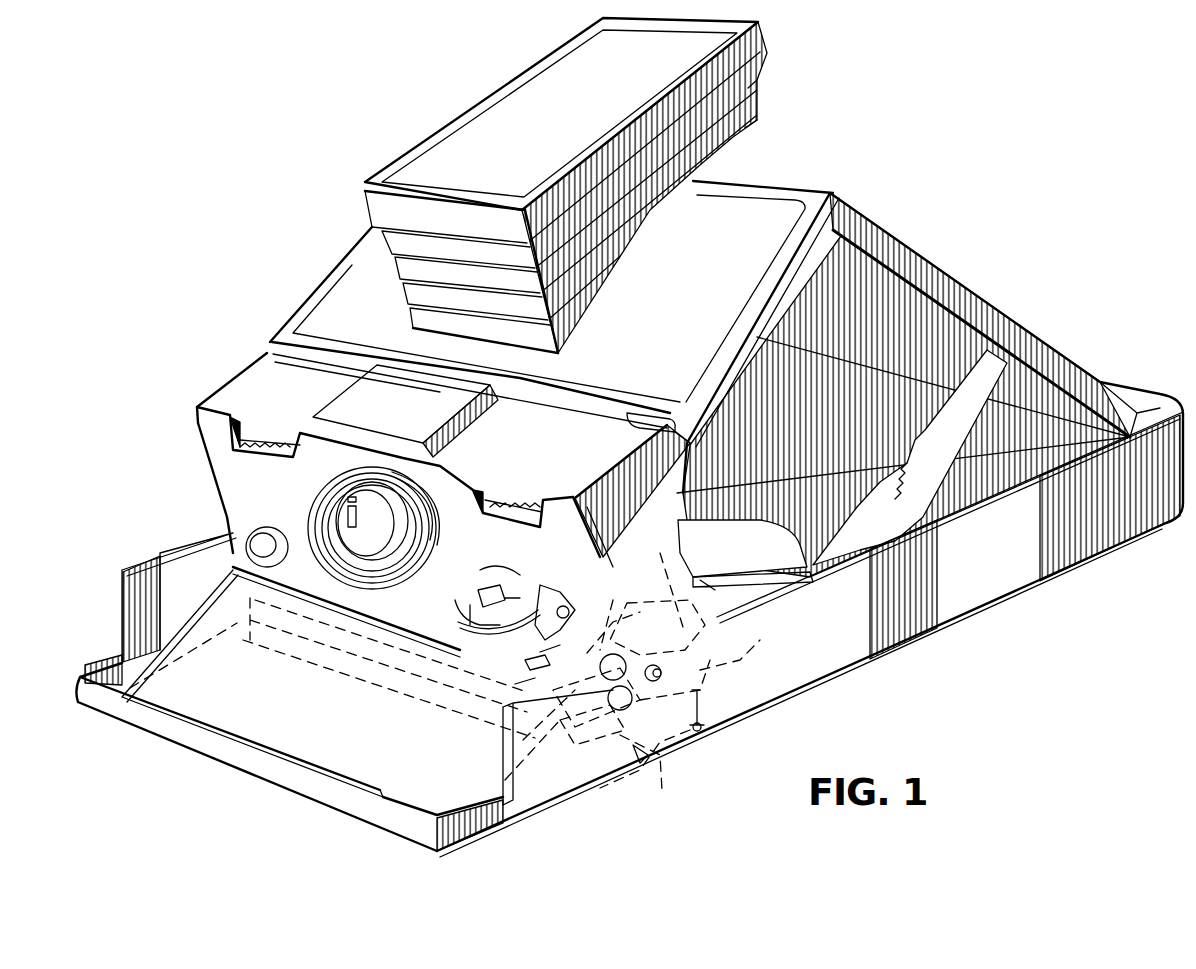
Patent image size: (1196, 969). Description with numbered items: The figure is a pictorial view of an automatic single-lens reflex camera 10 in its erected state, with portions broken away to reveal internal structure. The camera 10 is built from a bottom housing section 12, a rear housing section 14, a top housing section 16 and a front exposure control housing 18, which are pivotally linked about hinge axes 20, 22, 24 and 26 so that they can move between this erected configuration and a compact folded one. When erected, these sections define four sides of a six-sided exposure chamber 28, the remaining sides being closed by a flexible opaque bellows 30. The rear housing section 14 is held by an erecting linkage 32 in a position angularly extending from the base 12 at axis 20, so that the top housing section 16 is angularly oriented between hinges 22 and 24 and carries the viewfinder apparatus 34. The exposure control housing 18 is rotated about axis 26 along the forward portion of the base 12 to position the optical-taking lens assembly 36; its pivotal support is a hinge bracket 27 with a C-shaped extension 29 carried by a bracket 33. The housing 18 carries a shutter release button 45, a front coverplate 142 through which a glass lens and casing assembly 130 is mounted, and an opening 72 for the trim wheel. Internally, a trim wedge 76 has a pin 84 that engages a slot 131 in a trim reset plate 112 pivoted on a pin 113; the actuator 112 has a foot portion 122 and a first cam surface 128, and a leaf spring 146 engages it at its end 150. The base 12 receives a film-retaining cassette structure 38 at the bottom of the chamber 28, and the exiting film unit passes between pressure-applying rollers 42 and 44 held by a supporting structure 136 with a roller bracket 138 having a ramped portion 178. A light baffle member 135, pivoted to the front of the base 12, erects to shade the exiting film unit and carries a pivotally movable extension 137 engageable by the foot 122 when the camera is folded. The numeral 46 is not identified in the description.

The camera 10 is at (269, 310).
The bottom housing section 12 is at (877, 647).
The rear housing section 14 is at (997, 310).
The top housing section 16 is at (733, 210).
The front exposure control housing 18 is at (683, 553).
The hinge axis 20 is at (1133, 417).
The hinge axis 22 is at (836, 193).
The hinge axis 24 is at (645, 412).
The hinge axis 26 is at (700, 668).
The hinge bracket 27 is at (718, 615).
The exposure chamber 28 is at (753, 553).
The C-shaped extension 29 is at (690, 648).
The flexible bellows 30 is at (740, 340).
The erecting linkage 32 is at (908, 518).
The bracket 33 is at (645, 630).
The viewfinder apparatus 34 is at (445, 120).
The optical-taking lens assembly 36 is at (420, 540).
The film-retaining cassette structure 38 is at (800, 583).
The pressure-applying roller 42 is at (590, 578).
The pressure-applying roller 44 is at (643, 770).
The shutter release button 45 is at (283, 533).
The spring catch 46 is at (277, 440).
The opening 72 is at (500, 483).
The trim wedge 76 is at (550, 482).
The trim reset plate pin 84 is at (560, 605).
The trim reset plate 112 is at (600, 672).
The pin 113 is at (595, 552).
The foot portion 122 is at (562, 680).
The first cam surface 128 is at (515, 588).
The glass lens and casing assembly 130 is at (483, 590).
The slot 131 is at (530, 660).
The light baffle member 135 is at (311, 704).
The supporting structure 136 is at (645, 757).
The pivotally movable extension 137 is at (515, 684).
The roller bracket 138 is at (695, 735).
The front coverplate 142 is at (227, 477).
The leaf spring 146 is at (520, 650).
The end of leaf spring 150 is at (502, 615).
The ramped portion 178 is at (600, 763).